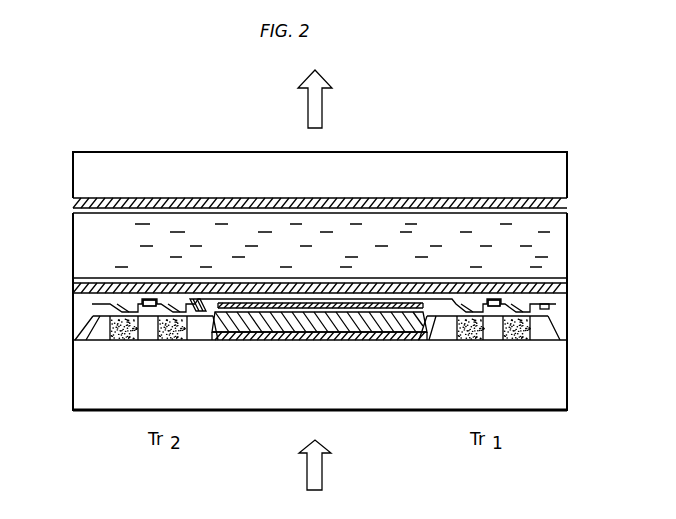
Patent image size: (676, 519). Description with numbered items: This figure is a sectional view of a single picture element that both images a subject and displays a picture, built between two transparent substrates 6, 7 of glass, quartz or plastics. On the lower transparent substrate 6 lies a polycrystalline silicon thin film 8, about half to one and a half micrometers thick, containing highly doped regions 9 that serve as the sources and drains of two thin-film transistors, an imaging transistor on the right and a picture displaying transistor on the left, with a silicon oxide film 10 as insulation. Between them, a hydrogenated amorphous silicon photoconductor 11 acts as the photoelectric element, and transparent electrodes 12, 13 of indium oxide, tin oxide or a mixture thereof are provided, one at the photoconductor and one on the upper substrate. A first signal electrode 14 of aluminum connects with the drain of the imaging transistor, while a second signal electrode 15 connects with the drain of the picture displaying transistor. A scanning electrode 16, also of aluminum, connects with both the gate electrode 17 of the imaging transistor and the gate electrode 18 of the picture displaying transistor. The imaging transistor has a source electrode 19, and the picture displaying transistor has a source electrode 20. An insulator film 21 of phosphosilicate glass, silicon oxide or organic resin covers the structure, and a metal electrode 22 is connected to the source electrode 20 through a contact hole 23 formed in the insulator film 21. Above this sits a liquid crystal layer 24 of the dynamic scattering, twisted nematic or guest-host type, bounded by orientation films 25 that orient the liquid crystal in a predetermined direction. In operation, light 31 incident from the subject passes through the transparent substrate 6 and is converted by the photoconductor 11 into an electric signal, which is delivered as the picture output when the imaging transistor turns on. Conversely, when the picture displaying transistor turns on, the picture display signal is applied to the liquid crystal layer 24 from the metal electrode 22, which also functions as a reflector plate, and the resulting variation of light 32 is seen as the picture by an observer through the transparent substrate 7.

The transparent substrate 6 is at (73, 394).
The transparent substrate 7 is at (73, 172).
The polycrystalline silicon thin film 8 is at (101, 332).
The highly doped regions 9 is at (124, 330).
The silicon oxide film 10 is at (86, 330).
The photoconductor 11 is at (313, 322).
The transparent electrode 12 is at (260, 309).
The transparent electrode 13 is at (73, 202).
The first signal electrode 14 is at (549, 308).
The second signal electrode 15 is at (95, 313).
The scanning electrode 16 is at (148, 307).
The gate electrode 17 is at (490, 350).
The gate electrode 18 is at (148, 351).
The source electrode 19 is at (396, 337).
The source electrode 20 is at (179, 315).
The insulator film 21 is at (92, 303).
The metal electrode 22 is at (73, 289).
The contact hole 23 is at (201, 312).
The liquid crystal layer 24 is at (73, 247).
The orientation film 25 is at (73, 212).
The light 31 is at (325, 465).
The light 32 is at (328, 99).